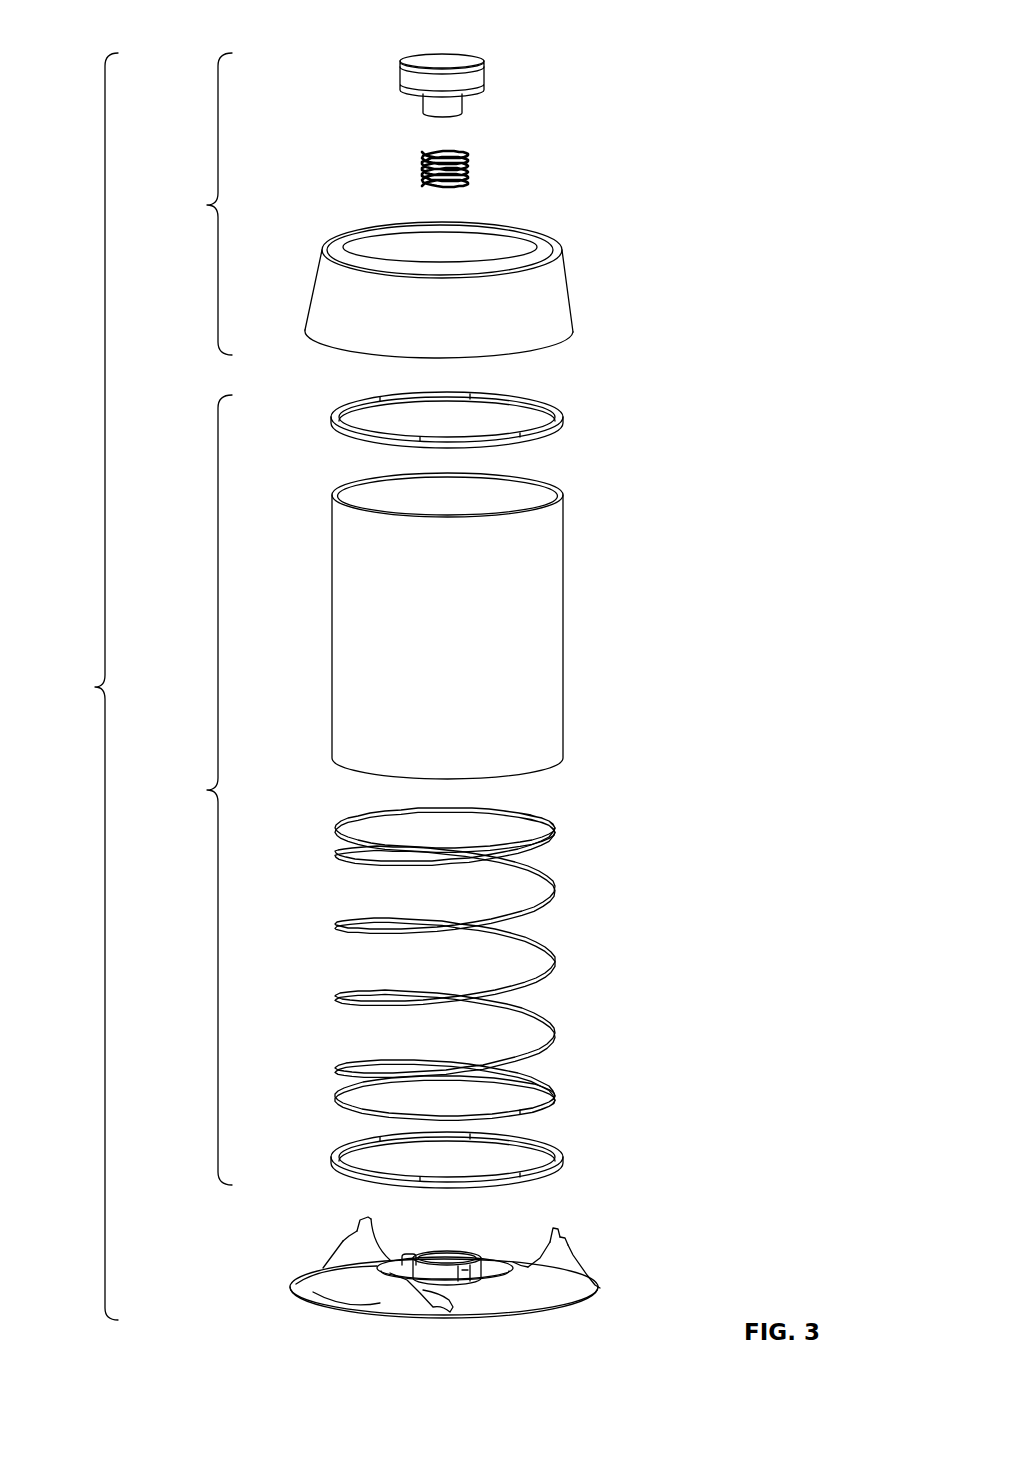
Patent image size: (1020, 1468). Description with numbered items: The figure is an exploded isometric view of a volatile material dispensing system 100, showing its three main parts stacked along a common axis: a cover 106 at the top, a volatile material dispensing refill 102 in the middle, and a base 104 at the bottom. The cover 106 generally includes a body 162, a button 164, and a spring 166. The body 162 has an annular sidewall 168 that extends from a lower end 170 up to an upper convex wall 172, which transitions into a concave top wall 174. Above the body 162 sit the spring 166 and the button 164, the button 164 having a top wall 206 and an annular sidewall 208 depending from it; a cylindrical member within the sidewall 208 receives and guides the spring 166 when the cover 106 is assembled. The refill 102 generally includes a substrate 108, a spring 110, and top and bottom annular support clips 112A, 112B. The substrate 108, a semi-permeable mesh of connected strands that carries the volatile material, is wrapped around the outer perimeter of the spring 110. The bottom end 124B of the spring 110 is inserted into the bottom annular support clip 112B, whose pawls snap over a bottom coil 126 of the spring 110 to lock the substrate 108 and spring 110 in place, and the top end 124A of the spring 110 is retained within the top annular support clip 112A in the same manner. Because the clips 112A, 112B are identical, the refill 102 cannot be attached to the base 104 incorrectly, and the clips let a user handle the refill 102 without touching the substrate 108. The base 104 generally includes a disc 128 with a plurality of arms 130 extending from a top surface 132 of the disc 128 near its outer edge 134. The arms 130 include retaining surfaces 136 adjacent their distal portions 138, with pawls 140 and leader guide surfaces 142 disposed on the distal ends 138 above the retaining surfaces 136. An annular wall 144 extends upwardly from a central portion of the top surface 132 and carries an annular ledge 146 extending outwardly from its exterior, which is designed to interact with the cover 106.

The volatile material dispensing system 100 is at (95, 687).
The volatile material dispensing refill 102 is at (207, 790).
The base 104 is at (465, 1272).
The cover 106 is at (207, 205).
The substrate 108 is at (542, 633).
The spring 110 is at (495, 970).
The top annular support clip 112A is at (563, 420).
The bottom annular support clip 112B is at (563, 1158).
The top end of the spring 124A is at (553, 833).
The bottom end of the spring 124B is at (553, 1088).
The bottom coil of the spring 126 is at (553, 1107).
The disc 128 is at (552, 1293).
The arms 130 is at (451, 1272).
The top surface of the disc 132 is at (492, 1298).
The outer edge of the disc 134 is at (598, 1287).
The retaining surfaces 136 is at (563, 1238).
The distal portions of the arms 138 is at (363, 1220).
The pawls 140 is at (557, 1230).
The leader guide surfaces 142 is at (355, 1228).
The annular wall 144 is at (510, 1262).
The annular ledge 146 is at (450, 1258).
The body 162 is at (480, 276).
The button 164 is at (441, 76).
The spring 166 is at (470, 166).
The annular sidewall 168 is at (557, 320).
The lower end 170 is at (568, 335).
The upper convex wall 172 is at (540, 230).
The concave top wall 174 is at (452, 243).
The top wall of the button 206 is at (420, 64).
The annular sidewall of the button 208 is at (410, 73).